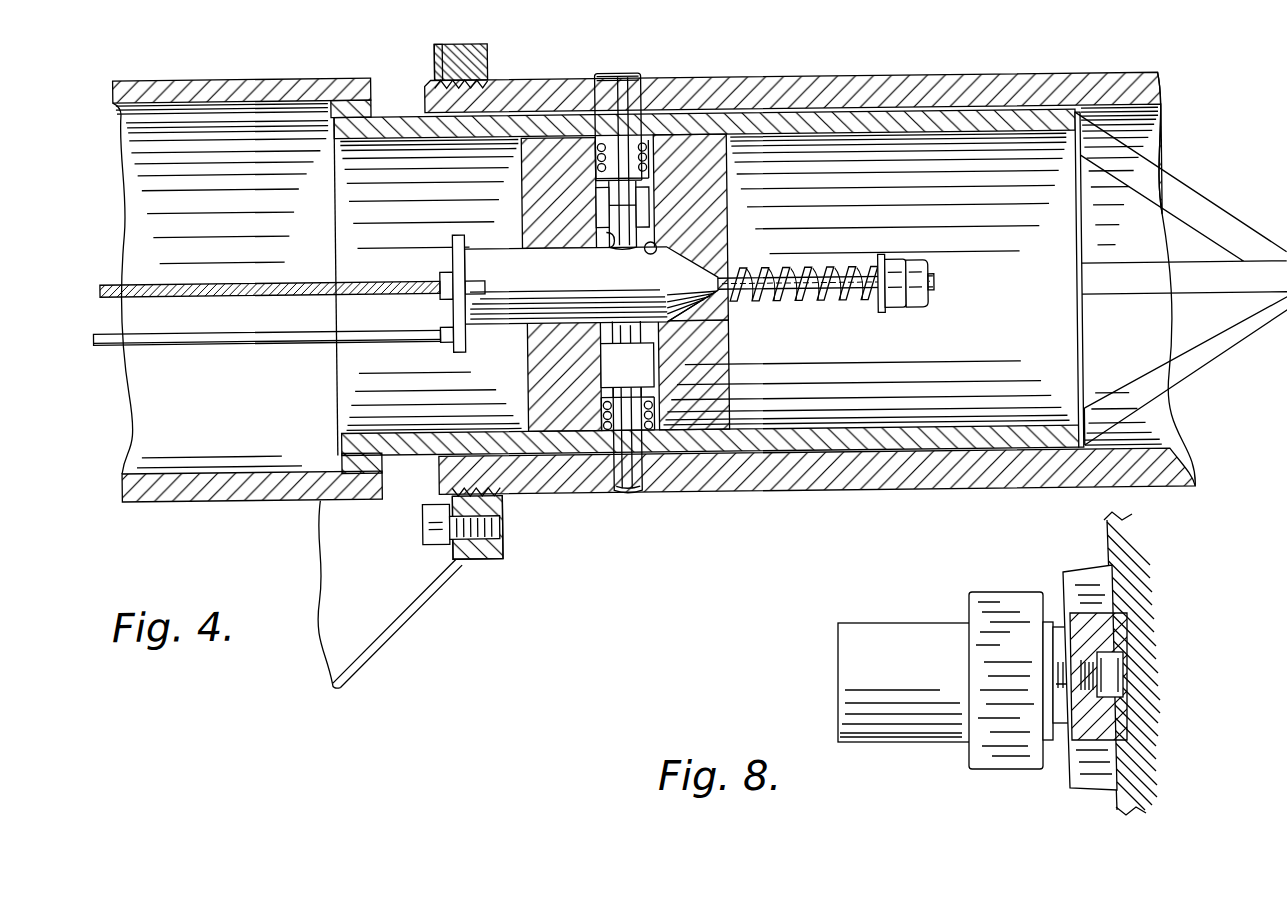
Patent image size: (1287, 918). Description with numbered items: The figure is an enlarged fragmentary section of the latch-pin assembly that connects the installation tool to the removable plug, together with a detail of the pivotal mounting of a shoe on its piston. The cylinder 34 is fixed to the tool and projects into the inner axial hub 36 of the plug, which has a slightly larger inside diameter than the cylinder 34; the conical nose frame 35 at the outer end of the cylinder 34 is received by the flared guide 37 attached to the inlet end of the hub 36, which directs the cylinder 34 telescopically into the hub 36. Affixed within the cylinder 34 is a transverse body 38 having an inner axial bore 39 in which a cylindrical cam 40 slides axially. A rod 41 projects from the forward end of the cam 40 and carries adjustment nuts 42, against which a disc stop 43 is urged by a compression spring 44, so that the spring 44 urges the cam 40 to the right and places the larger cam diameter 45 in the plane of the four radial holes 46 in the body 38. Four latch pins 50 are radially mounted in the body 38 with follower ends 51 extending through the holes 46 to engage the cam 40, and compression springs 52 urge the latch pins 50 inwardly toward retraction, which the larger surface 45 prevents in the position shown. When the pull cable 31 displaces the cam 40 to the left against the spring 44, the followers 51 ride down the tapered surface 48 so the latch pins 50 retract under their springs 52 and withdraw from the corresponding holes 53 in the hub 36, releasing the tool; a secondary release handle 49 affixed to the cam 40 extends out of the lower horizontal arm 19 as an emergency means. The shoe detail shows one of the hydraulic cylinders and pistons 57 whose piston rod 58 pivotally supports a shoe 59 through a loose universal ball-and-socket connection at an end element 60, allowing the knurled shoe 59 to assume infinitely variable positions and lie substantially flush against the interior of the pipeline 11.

In FIG. 4, the lower horizontal arm 19 is at (295, 78).
In FIG. 4, the cylinder 34 is at (807, 120).
In FIG. 4, the inner axial hub 36 is at (957, 89).
In FIG. 4, the tapered surface 48 is at (700, 264).
In FIG. 4, the compression springs 52 is at (650, 155).
In FIG. 4, the transverse body 38 is at (713, 163).
In FIG. 4, the cylindrical cam 40 is at (520, 292).
In FIG. 4, the radial holes 46 is at (607, 232).
In FIG. 4, the pull cable 31 is at (192, 295).
In FIG. 4, the secondary release handle 49 is at (198, 338).
In FIG. 4, the latch pins 50 is at (627, 80).
In FIG. 4, the holes 53 is at (600, 80).
In FIG. 4, the follower ends 51 is at (620, 206).
In FIG. 4, the inner axial bore 39 is at (650, 243).
In FIG. 4, the larger cam diameter 45 is at (700, 347).
In FIG. 4, the rod 41 is at (793, 302).
In FIG. 4, the compression spring 44 is at (825, 305).
In FIG. 4, the disc stop 43 is at (887, 312).
In FIG. 4, the adjustment nuts 42 is at (913, 307).
In FIG. 4, the conical nose frame 35 is at (1203, 215).
In FIG. 4, the flared guide 37 is at (383, 633).
In FIG. 8, the hydraulic cylinders and pistons 57 is at (860, 623).
In FIG. 8, the pipeline 11 is at (1112, 535).
In FIG. 8, the shoe 59 is at (1075, 773).
In FIG. 8, the piston rod 58 is at (1122, 690).
In FIG. 8, the end element 60 is at (1117, 666).